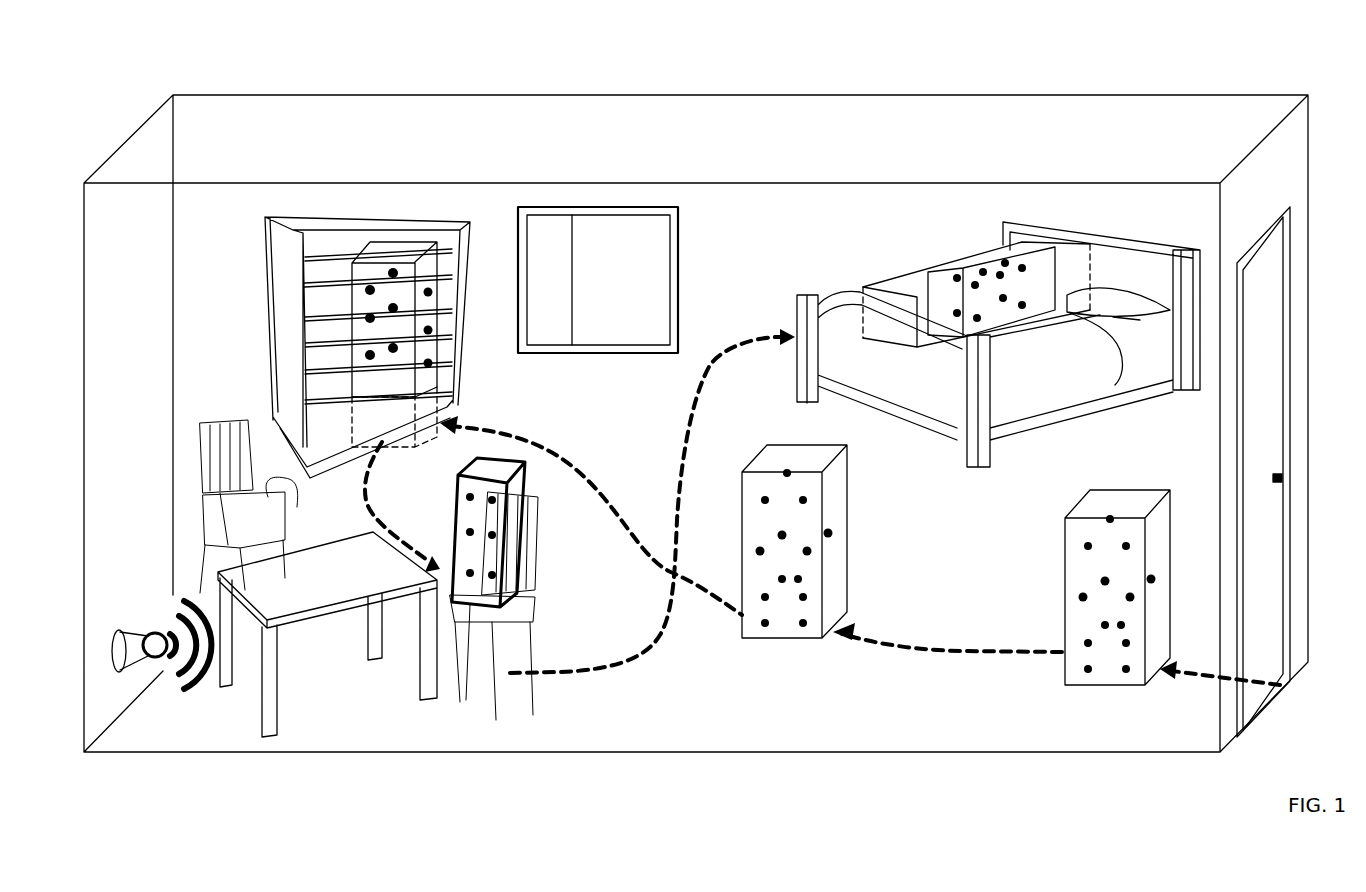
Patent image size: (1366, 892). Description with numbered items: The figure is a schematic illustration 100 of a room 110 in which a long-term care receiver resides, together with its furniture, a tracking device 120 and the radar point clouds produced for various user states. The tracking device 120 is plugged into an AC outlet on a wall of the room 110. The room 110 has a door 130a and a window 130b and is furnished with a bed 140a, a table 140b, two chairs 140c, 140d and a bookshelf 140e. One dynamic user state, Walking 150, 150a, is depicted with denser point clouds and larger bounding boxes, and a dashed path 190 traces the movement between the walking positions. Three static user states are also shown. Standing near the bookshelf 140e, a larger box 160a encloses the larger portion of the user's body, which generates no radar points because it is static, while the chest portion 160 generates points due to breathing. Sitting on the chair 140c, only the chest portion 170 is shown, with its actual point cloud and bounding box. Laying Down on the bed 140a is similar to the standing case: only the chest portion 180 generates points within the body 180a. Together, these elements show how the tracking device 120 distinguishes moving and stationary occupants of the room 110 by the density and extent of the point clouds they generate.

The schematic illustration 100 is at (1350, 126).
The room 110 is at (108, 166).
The tracking device 120 is at (145, 634).
The door 130a is at (1291, 438).
The window 130b is at (628, 207).
The bed 140a is at (850, 296).
The table 140b is at (262, 688).
The chair 140c is at (500, 650).
The chair 140d is at (202, 424).
The bookshelf 140e is at (346, 215).
The walking user state bounding box 150 is at (1078, 686).
The walking user state bounding box 150a is at (780, 640).
The chest portion 160 is at (420, 262).
The larger box 160a is at (358, 426).
The chest portion 170 is at (505, 592).
The chest portion 180 is at (983, 255).
The body 180a is at (912, 272).
The propagation path 190 is at (1003, 652).